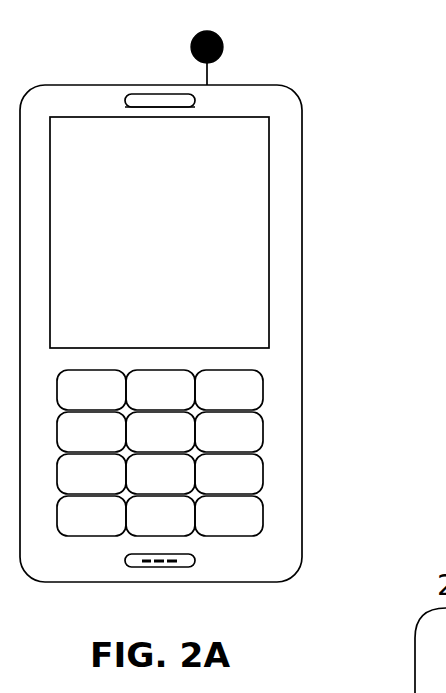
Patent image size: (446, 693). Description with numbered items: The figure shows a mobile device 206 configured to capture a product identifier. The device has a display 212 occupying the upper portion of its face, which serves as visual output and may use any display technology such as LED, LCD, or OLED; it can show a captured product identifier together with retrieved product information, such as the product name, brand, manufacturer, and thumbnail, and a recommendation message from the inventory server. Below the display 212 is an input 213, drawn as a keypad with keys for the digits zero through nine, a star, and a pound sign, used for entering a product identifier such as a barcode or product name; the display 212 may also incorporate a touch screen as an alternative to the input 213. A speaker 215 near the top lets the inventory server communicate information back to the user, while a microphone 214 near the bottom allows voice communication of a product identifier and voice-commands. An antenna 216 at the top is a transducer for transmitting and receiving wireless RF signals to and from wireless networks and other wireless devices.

The mobile device 206 is at (159, 84).
The display 212 is at (269, 229).
The input 213 is at (263, 430).
The microphone 214 is at (158, 568).
The speaker 215 is at (158, 109).
The antenna 216 is at (218, 62).